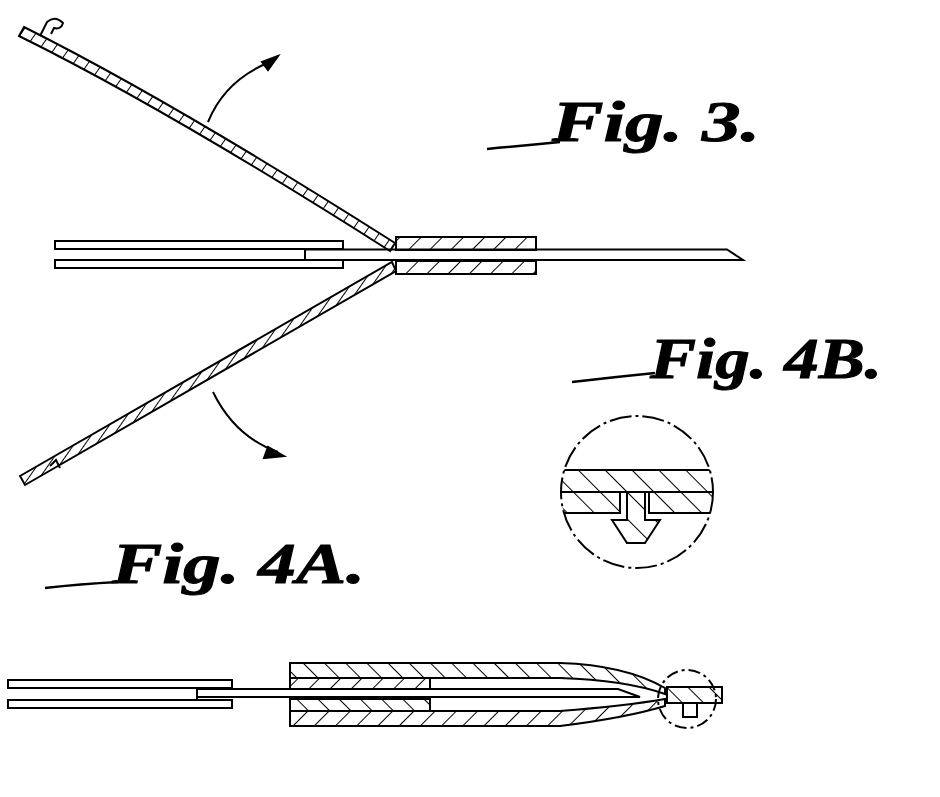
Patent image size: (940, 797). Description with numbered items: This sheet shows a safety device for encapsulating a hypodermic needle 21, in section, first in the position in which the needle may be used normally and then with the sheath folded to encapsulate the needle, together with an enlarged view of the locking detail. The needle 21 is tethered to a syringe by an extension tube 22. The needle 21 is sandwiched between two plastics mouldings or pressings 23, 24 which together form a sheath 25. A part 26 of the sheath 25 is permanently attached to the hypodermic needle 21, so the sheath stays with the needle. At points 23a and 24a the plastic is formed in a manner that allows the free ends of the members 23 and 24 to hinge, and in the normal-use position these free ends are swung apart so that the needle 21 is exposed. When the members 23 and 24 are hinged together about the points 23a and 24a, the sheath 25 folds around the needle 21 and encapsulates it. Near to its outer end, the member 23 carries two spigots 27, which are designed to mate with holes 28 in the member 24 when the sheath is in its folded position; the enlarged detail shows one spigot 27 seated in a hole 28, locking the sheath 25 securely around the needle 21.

In FIG. 3, the hypodermic needle 21 is at (643, 249).
In FIG. 4A, the hypodermic needle 21 is at (575, 698).
In FIG. 3, the extension tube 22 is at (122, 241).
In FIG. 4A, the extension tube 22 is at (130, 680).
In FIG. 3, the plastics moulding 23 is at (330, 201).
In FIG. 4A, the plastics moulding 23 is at (487, 664).
In FIG. 3, the hinge point of member 23 23a is at (482, 214).
In FIG. 4A, the hinge point of member 23 23a is at (294, 659).
In FIG. 3, the plastics moulding 24 is at (300, 330).
In FIG. 4A, the plastics moulding 24 is at (522, 718).
In FIG. 3, the hinge point of member 24 24a is at (396, 275).
In FIG. 4A, the hinge point of member 24 24a is at (290, 717).
In FIG. 3, the sheath 25 is at (170, 93).
In FIG. 3, the part of the sheath 26 is at (516, 274).
In FIG. 4A, the part of the sheath 26 is at (388, 712).
In FIG. 3, the spigots 27 is at (62, 39).
In FIG. 4B, the spigots 27 is at (620, 537).
In FIG. 3, the holes 28 is at (57, 467).
In FIG. 4B, the holes 28 is at (655, 470).